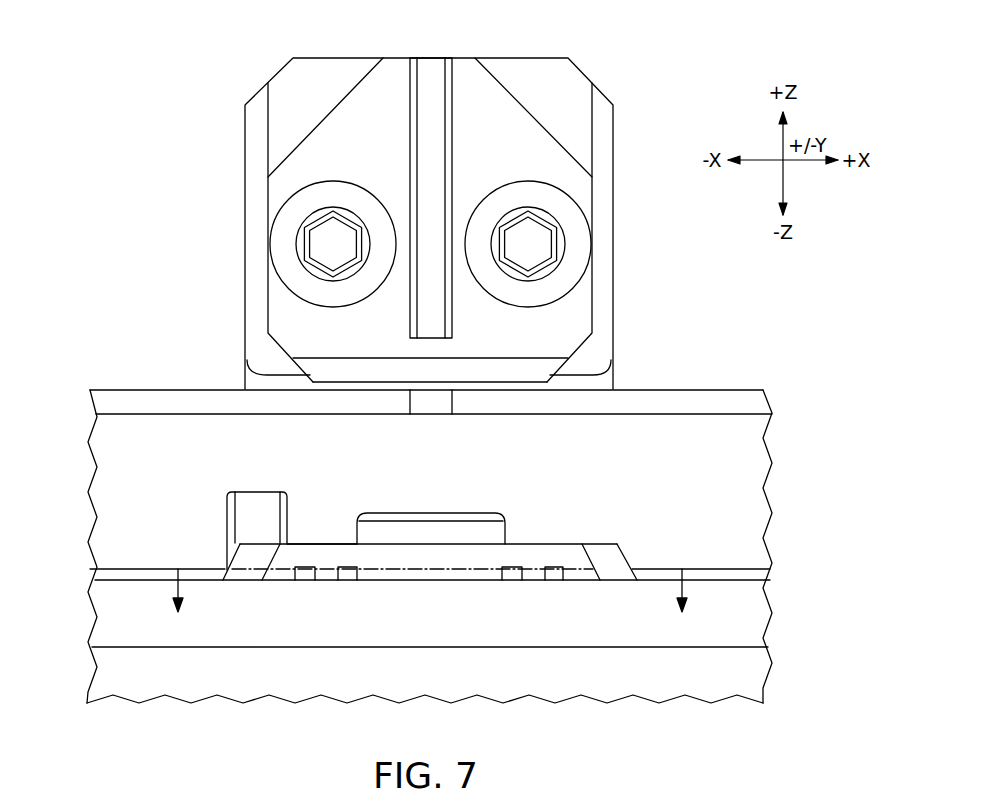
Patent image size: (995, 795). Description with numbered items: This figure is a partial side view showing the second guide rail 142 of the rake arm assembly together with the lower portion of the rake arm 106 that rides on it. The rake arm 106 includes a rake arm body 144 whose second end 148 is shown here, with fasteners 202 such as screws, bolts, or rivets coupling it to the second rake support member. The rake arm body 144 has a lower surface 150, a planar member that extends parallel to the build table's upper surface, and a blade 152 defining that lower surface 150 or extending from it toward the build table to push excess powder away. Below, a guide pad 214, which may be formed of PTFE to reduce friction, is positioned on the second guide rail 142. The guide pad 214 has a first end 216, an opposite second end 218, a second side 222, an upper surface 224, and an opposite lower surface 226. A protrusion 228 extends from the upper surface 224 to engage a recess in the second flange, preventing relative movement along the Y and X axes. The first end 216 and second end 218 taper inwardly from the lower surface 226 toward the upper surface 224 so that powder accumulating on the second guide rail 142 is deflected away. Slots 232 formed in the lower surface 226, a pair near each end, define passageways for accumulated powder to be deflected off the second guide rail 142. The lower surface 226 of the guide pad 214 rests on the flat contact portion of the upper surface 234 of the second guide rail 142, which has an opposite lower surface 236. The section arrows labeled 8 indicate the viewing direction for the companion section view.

The rake arm 106 is at (492, 233).
The rake arm body 144 is at (613, 247).
The second end 148 is at (490, 98).
The fasteners 202 is at (340, 224).
The lower surface 150 is at (483, 382).
The blade 152 is at (446, 414).
The second guide rail 142 is at (429, 580).
The guide pad 214 is at (433, 540).
The first end 216 is at (255, 552).
The upper surface 224 is at (337, 543).
The protrusion 228 is at (430, 513).
The second side 222 is at (523, 546).
The second end 218 is at (607, 552).
The upper surface 234 is at (713, 571).
The slots 232 is at (306, 582).
The lower surface 226 is at (432, 583).
The lower surface 236 is at (628, 651).
The section view direction 8 is at (429, 605).